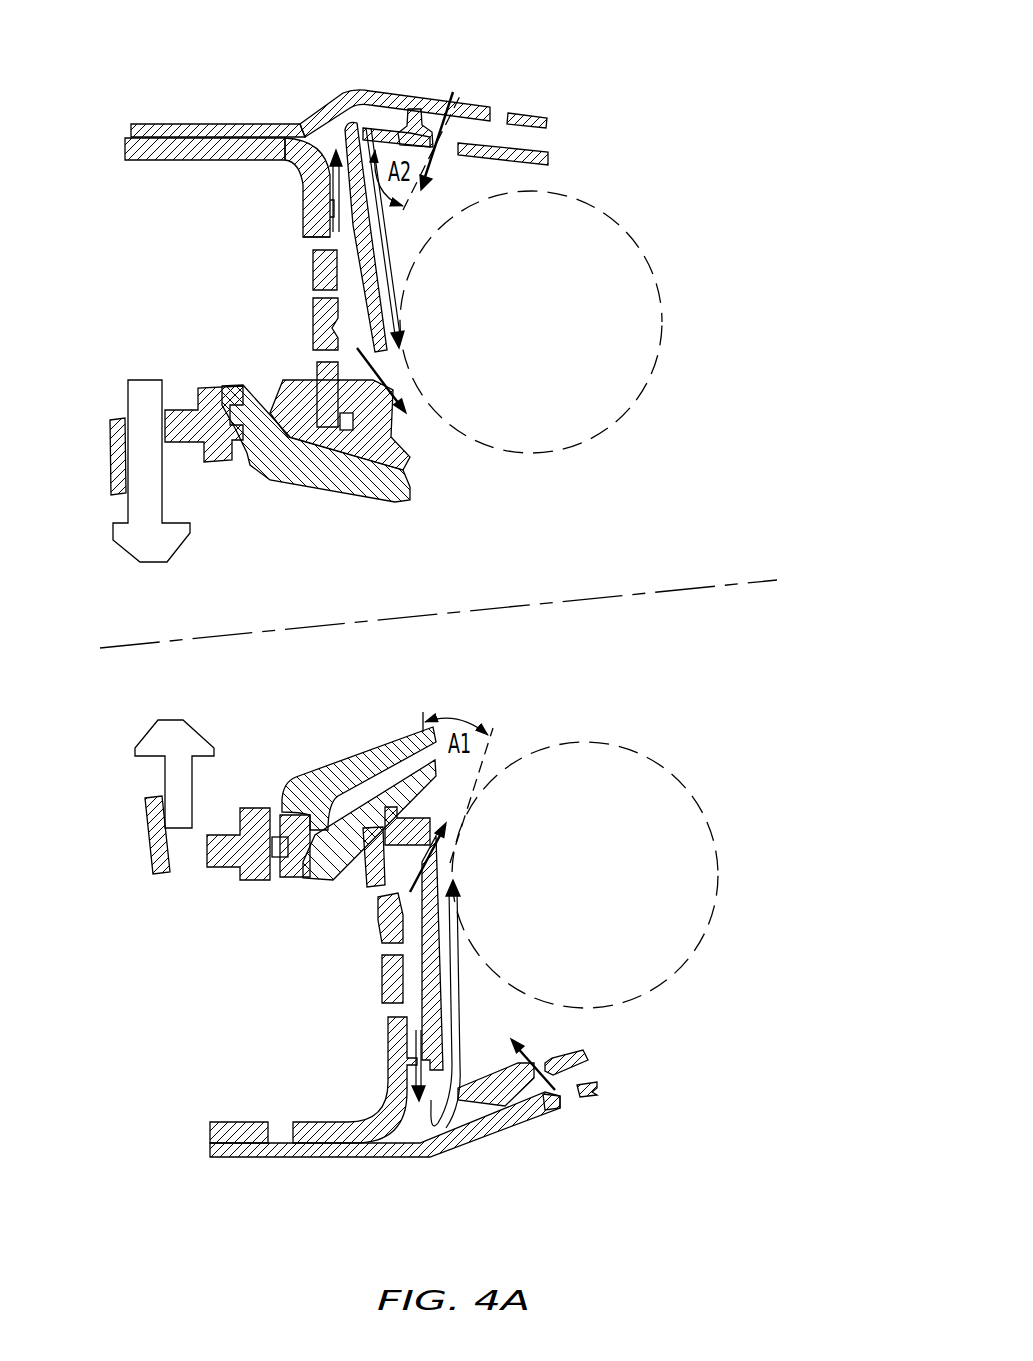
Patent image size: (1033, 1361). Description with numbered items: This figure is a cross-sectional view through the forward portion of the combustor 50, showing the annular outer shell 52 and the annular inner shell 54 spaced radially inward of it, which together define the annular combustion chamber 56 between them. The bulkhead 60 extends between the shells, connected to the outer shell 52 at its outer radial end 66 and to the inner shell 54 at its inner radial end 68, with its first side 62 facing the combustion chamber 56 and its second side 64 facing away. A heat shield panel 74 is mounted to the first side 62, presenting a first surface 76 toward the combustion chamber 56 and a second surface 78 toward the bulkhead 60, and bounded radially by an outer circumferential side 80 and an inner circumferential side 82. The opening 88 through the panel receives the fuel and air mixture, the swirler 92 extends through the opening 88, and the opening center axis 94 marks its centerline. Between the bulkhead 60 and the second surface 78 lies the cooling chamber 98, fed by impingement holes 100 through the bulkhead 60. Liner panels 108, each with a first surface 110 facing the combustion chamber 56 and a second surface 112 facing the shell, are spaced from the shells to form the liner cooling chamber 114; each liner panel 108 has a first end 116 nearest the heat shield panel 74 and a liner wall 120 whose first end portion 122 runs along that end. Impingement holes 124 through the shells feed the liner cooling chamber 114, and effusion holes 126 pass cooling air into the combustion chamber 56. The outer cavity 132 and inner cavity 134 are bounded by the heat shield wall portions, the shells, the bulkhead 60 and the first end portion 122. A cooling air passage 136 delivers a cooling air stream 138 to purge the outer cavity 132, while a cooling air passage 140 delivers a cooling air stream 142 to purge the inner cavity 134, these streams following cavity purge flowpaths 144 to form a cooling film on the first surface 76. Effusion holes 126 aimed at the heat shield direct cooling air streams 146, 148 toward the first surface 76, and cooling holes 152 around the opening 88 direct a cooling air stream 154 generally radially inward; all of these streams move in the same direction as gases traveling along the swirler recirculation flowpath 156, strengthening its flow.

The combustor 50 is at (683, 100).
The outer shell 52 is at (366, 90).
The inner shell 54 is at (275, 1158).
The combustion chamber 56 is at (650, 533).
The bulkhead 60 is at (296, 218).
The first side 62 is at (392, 330).
The second side 64 is at (313, 332).
The outer radial end 66 is at (243, 124).
The inner radial end 68 is at (345, 1145).
The heat shield panel 74 is at (410, 305).
The first surface 76 is at (380, 277).
The second surface 78 is at (316, 282).
The outer circumferential side 80 is at (340, 140).
The inner circumferential side 82 is at (457, 1087).
The opening 88 is at (404, 657).
The swirler 92 is at (390, 492).
The opening center axis 94 is at (783, 583).
The cooling chamber 98 is at (380, 917).
The impingement holes 100 is at (380, 1018).
The liner panel 108 is at (540, 182).
The first surface 110 is at (495, 160).
The second surface 112 is at (546, 147).
The liner cooling chamber 114 is at (580, 1076).
The first end 116 is at (455, 1110).
The liner wall 120 is at (552, 1112).
The first end portion 122 is at (490, 1106).
The impingement holes 124 is at (499, 110).
The effusion holes 126 is at (441, 128).
The outer cavity 132 is at (329, 128).
The inner cavity 134 is at (413, 1116).
The cooling air passage 136 is at (306, 193).
The cooling air stream 138 is at (308, 240).
The cooling air passage 140 is at (413, 1075).
The cooling air stream 142 is at (412, 1050).
The cavity purge flowpaths 144 is at (370, 252).
The cooling air stream 146 is at (420, 108).
The cooling air stream 148 is at (552, 1083).
The cooling holes 152 is at (440, 852).
The cooling air stream 154 is at (395, 388).
The swirler recirculation flowpath 156 is at (622, 425).